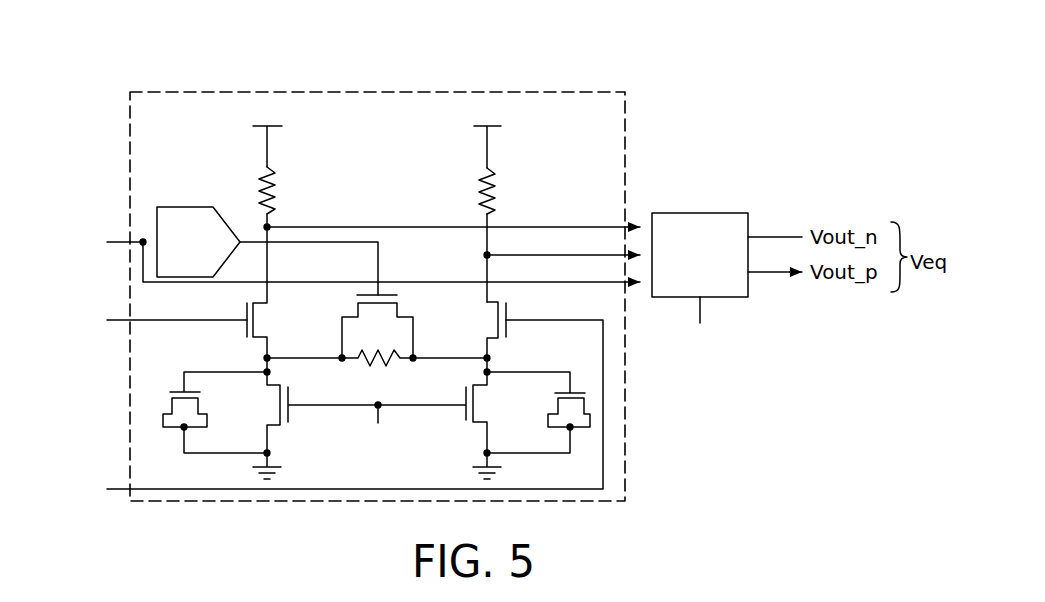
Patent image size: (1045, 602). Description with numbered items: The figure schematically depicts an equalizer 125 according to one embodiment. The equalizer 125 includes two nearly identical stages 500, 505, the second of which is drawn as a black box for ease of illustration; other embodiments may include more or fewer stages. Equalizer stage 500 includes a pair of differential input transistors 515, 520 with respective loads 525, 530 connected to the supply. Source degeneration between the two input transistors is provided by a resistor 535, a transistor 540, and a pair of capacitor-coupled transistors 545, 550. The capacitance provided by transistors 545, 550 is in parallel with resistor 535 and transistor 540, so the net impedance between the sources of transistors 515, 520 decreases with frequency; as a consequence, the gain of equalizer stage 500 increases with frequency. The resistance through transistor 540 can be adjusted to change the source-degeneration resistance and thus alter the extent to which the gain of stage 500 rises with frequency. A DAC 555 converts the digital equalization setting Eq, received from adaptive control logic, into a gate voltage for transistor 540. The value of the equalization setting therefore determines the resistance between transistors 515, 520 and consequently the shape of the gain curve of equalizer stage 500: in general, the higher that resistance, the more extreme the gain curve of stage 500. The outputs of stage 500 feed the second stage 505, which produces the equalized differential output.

The equalizer 125 is at (723, 47).
The equalizer stage 500 is at (334, 296).
The equalizer stage 505 is at (727, 281).
The differential input transistor 515 is at (258, 337).
The differential input transistor 520 is at (508, 318).
The load 525 is at (272, 189).
The load 530 is at (481, 191).
The resistor 535 is at (382, 367).
The transistor 540 is at (397, 307).
The capacitor-coupled transistor 545 is at (200, 423).
The capacitor-coupled transistor 550 is at (556, 425).
The DAC 555 is at (198, 242).